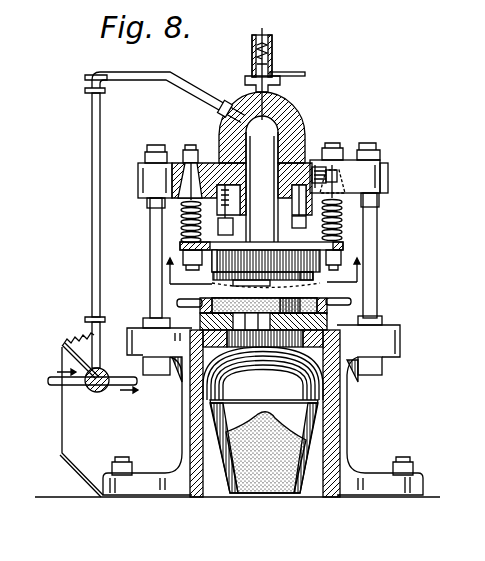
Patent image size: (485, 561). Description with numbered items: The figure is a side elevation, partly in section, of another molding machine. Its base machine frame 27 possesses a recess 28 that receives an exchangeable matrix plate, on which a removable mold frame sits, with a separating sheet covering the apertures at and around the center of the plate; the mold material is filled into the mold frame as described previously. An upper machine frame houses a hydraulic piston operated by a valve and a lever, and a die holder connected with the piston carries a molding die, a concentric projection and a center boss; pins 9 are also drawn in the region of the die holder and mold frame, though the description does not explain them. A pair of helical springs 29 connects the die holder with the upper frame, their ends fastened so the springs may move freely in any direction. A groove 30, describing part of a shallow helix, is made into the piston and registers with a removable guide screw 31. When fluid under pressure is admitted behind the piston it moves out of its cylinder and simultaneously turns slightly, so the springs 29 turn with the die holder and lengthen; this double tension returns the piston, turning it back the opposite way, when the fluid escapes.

The pins 9 is at (261, 297).
The base machine frame 27 is at (375, 490).
The recess 28 is at (192, 374).
The helical springs 29 is at (150, 203).
The groove 30 is at (307, 115).
The removable guide screw 31 is at (309, 158).